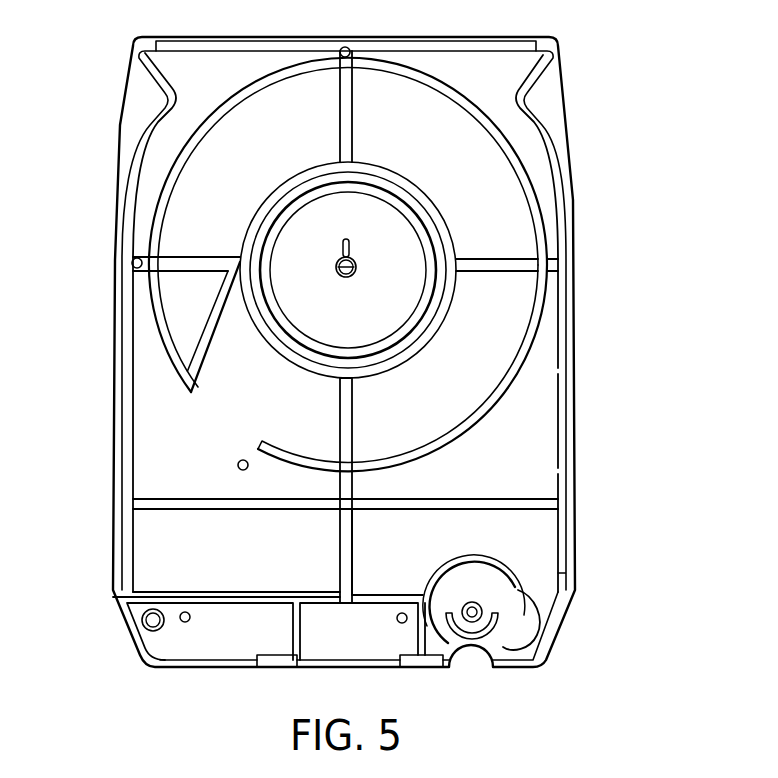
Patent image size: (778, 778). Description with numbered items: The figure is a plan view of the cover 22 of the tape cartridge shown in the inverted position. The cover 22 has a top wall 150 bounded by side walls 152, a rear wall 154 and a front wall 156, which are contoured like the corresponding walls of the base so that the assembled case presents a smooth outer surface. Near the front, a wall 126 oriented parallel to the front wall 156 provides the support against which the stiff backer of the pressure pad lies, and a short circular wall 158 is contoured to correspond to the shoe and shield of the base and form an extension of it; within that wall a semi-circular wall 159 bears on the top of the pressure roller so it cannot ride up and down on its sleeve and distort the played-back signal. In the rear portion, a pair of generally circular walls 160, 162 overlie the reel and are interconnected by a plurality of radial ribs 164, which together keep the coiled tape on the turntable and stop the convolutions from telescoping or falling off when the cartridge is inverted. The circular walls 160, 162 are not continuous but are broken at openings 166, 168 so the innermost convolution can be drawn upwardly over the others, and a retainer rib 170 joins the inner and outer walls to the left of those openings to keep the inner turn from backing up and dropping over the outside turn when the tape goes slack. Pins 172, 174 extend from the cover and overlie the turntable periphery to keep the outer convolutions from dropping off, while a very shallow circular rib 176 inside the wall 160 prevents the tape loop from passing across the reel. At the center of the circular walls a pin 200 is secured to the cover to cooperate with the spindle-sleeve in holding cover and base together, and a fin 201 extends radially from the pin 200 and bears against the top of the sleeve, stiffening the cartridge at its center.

The cover 22 is at (586, 275).
The wall 126 is at (280, 572).
The top wall 150 is at (205, 68).
The side walls 152 is at (576, 343).
The rear wall 154 is at (446, 38).
The front wall 156 is at (265, 670).
The short circular wall 158 is at (518, 575).
The semi-circular wall 159 is at (447, 613).
The inner circular wall 160 is at (449, 228).
The outer circular wall 162 is at (464, 99).
The radial ribs 164 is at (355, 116).
The opening 166 is at (318, 376).
The opening 168 is at (217, 418).
The retainer rib 170 is at (217, 303).
The pin 172 is at (131, 260).
The pin 174 is at (354, 47).
The shallow circular rib 176 is at (407, 212).
The pin 200 is at (352, 276).
The fin 201 is at (352, 248).